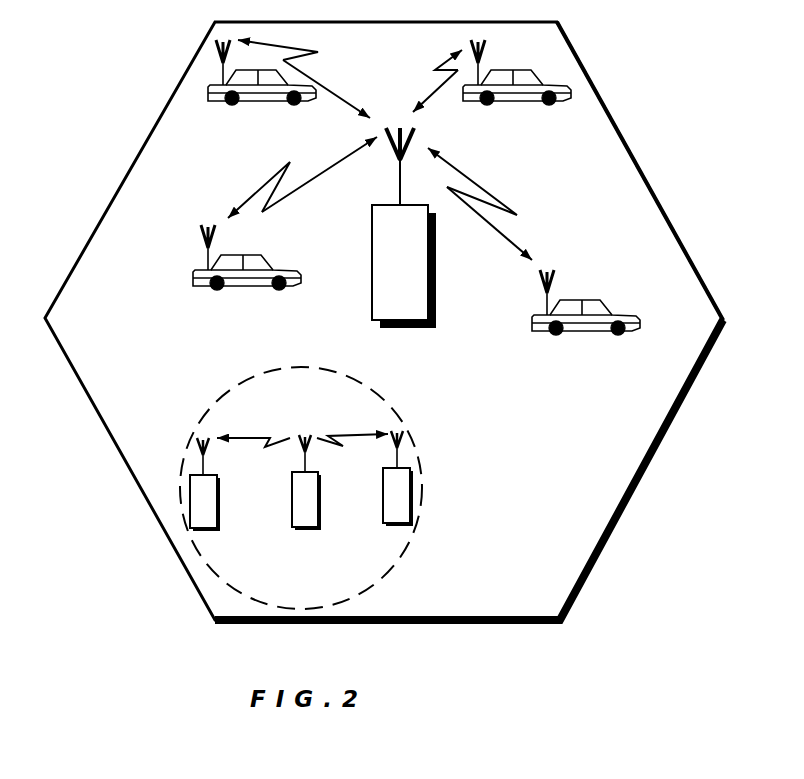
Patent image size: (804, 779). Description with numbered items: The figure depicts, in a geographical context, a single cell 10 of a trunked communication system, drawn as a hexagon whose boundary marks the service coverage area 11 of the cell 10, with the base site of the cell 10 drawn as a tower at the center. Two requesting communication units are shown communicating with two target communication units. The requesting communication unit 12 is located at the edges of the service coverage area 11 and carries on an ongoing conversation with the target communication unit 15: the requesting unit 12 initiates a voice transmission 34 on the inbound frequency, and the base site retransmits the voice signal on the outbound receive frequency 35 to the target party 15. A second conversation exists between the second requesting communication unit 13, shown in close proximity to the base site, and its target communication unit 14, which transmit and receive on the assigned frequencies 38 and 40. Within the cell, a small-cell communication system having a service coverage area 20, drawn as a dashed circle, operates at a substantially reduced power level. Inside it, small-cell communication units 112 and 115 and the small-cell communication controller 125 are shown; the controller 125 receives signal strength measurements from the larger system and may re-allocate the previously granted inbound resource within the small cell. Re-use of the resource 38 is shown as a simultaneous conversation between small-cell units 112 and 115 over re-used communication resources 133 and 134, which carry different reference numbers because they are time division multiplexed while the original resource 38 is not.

The cell 10 is at (372, 320).
The service coverage area 11 is at (618, 525).
The requesting communication unit 12 is at (262, 283).
The second requesting communication unit 13 is at (500, 100).
The target communication unit 14 is at (238, 103).
The target communication unit 15 is at (583, 297).
The small-cell service coverage area 20 is at (417, 523).
The voice transmission 34 is at (312, 183).
The outbound receive frequency 35 is at (493, 230).
The assigned frequency 38 is at (437, 93).
The assigned frequency 40 is at (333, 97).
The small-cell communication unit 112 is at (208, 528).
The small-cell communication unit 115 is at (413, 487).
The small-cell communication controller 125 is at (318, 513).
The re-used communication resource 133 is at (270, 437).
The re-used communication resource 134 is at (343, 433).